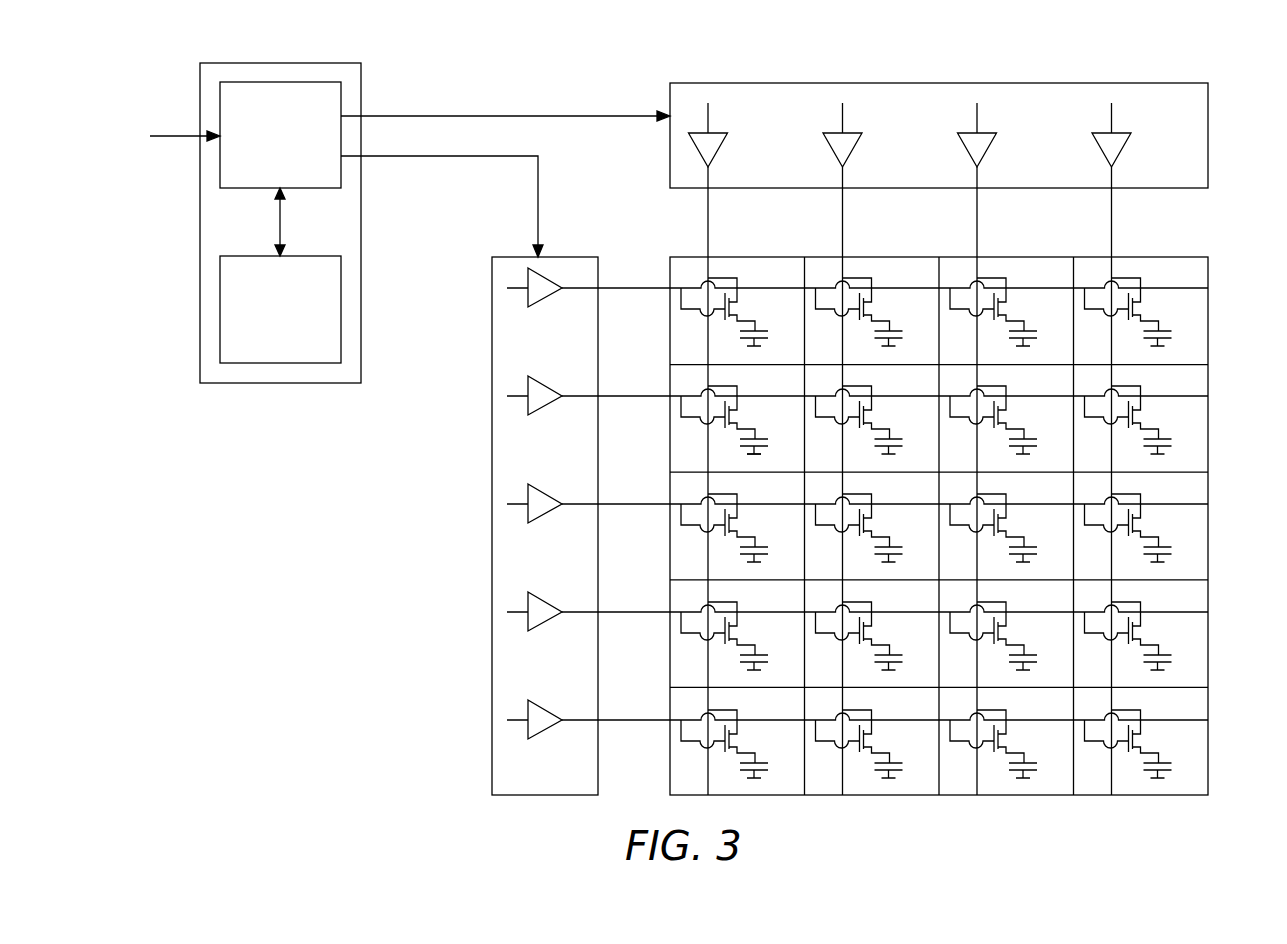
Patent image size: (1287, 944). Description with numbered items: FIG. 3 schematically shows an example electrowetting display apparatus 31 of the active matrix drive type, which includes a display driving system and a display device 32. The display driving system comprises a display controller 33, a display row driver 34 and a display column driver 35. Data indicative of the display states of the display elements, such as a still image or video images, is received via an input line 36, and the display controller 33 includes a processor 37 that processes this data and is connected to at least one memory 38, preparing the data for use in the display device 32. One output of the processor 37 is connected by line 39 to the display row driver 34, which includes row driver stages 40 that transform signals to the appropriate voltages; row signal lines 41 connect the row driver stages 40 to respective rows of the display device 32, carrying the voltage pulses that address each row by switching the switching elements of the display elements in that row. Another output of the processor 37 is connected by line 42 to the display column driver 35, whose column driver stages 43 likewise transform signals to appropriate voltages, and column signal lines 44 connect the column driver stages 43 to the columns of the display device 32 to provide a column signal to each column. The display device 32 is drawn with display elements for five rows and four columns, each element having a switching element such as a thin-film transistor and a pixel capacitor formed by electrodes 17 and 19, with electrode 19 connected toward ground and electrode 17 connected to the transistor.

The electrode 17 is at (768, 443).
The electrode 19 is at (766, 459).
The electrowetting display apparatus 31 is at (600, 67).
The display device 32 is at (967, 526).
The display controller 33 is at (260, 223).
The display row driver 34 is at (517, 508).
The display column driver 35 is at (946, 135).
The input line 36 is at (175, 134).
The processor 37 is at (220, 180).
The memory 38 is at (220, 270).
The line 39 is at (430, 158).
The row driver stages 40 is at (548, 280).
The row signal lines 41 is at (637, 287).
The line 42 is at (497, 115).
The column driver stages 43 is at (692, 148).
The column signal lines 44 is at (707, 226).